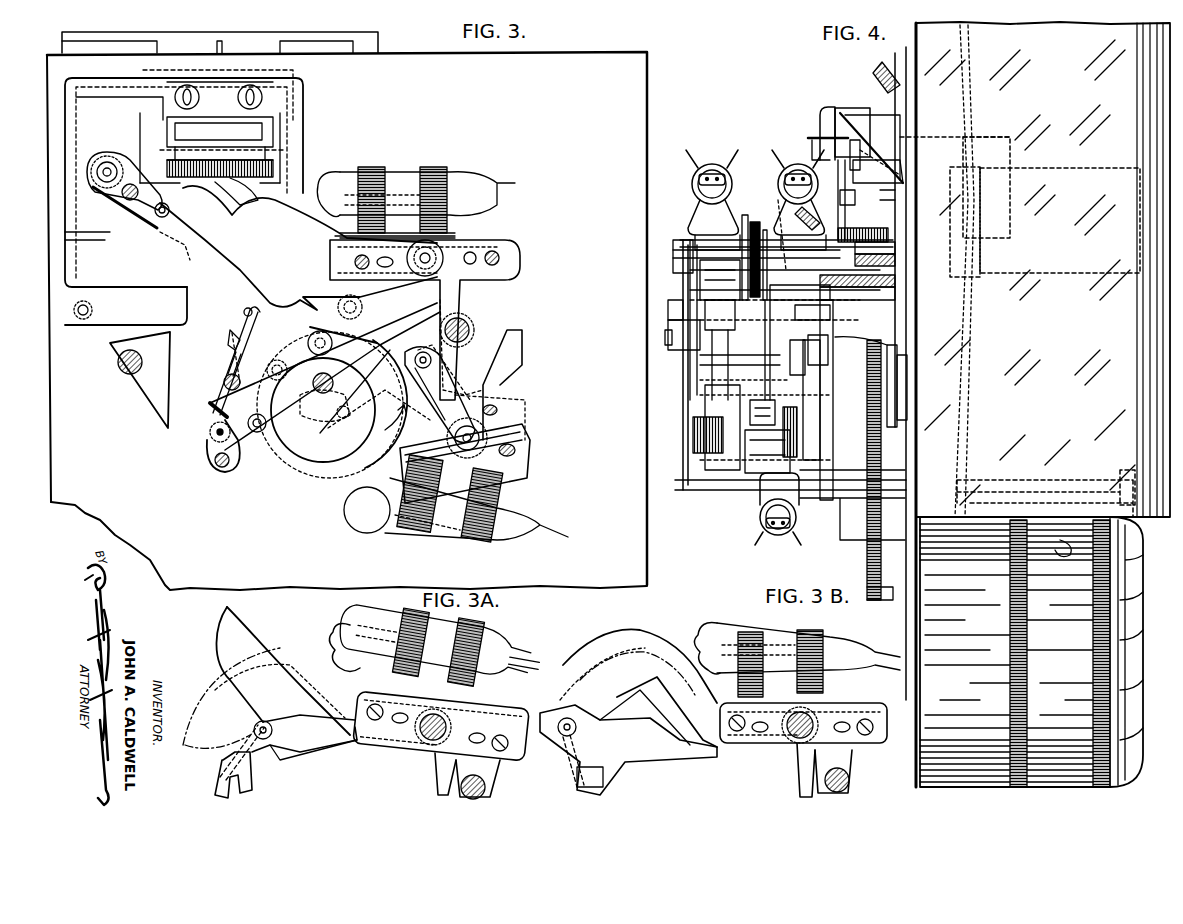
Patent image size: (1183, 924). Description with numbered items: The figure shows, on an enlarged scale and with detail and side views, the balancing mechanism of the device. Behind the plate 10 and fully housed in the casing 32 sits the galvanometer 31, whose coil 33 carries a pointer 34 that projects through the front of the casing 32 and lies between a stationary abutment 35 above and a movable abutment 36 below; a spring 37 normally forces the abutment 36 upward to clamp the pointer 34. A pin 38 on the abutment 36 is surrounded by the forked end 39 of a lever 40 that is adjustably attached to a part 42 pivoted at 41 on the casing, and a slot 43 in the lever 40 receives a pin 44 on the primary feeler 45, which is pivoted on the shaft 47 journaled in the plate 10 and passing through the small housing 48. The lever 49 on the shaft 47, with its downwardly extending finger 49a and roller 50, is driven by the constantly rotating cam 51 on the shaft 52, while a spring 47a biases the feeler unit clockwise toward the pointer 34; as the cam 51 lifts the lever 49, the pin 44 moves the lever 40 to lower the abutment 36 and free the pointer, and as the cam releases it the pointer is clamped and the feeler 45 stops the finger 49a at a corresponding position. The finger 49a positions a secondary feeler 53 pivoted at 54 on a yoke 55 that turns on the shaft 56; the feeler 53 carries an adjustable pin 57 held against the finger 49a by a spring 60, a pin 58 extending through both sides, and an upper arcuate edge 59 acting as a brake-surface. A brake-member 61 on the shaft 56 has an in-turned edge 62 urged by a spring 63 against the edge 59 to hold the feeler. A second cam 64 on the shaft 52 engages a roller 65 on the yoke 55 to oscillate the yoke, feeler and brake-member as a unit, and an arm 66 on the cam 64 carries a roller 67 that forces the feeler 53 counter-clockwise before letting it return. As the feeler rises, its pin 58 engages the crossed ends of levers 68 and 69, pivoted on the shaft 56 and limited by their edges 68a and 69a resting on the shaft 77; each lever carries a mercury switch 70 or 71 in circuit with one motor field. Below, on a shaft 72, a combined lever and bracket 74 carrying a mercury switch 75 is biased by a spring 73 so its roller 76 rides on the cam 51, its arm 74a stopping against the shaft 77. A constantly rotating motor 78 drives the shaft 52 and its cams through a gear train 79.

In FIG. 4, the plate 10 is at (918, 468).
In FIG. 3, the galvanometer 31 is at (380, 42).
In FIG. 4, the galvanometer 31 is at (1072, 168).
In FIG. 4, the casing 32 is at (1030, 480).
In FIG. 4, the coil 33 is at (972, 212).
In FIG. 3, the pointer 34 is at (187, 140).
In FIG. 4, the pointer 34 is at (930, 135).
In FIG. 3, the stationary abutment 35 is at (183, 130).
In FIG. 4, the stationary abutment 35 is at (848, 110).
In FIG. 3, the movable abutment 36 is at (260, 147).
In FIG. 4, the movable abutment 36 is at (814, 140).
In FIG. 3, the spring 37 is at (273, 193).
In FIG. 4, the spring 37 is at (895, 195).
In FIG. 3, the pin 38 is at (273, 170).
In FIG. 4, the pin 38 is at (852, 152).
In FIG. 3, the forked end 39 is at (262, 160).
In FIG. 4, the forked end 39 is at (828, 112).
In FIG. 3, the lever 40 is at (140, 168).
In FIG. 4, the lever 40 is at (905, 170).
In FIG. 3, the pivot 41 is at (105, 165).
In FIG. 3, the part 42 is at (98, 220).
In FIG. 3, the slot 43 is at (135, 197).
In FIG. 3, the pin 44 is at (162, 212).
In FIG. 4, the pin 44 is at (853, 200).
In FIG. 3, the primary feeler 45 is at (175, 165).
In FIG. 4, the primary feeler 45 is at (820, 112).
In FIG. 3, the shaft 47 is at (183, 280).
In FIG. 4, the shaft 47 is at (850, 232).
In FIG. 4, the spring 47a is at (895, 240).
In FIG. 3, the housing 48 is at (160, 232).
In FIG. 4, the housing 48 is at (858, 285).
In FIG. 3, the lever 49 is at (226, 320).
In FIG. 4, the lever 49 is at (783, 207).
In FIG. 3, the finger 49a is at (242, 449).
In FIG. 3, the roller 50 is at (420, 356).
In FIG. 4, the roller 50 is at (805, 312).
In FIG. 3, the cam 51 is at (345, 468).
In FIG. 4, the cam 51 is at (820, 462).
In FIG. 3, the shaft 52 is at (323, 395).
In FIG. 4, the shaft 52 is at (822, 410).
In FIG. 3, the secondary feeler 53 is at (218, 400).
In FIG. 4, the secondary feeler 53 is at (722, 400).
In FIG. 3A, the secondary feeler 53 is at (282, 750).
In FIG. 3B, the secondary feeler 53 is at (608, 767).
In FIG. 3, the pivot 54 is at (216, 432).
In FIG. 3, the yoke 55 is at (410, 364).
In FIG. 4, the yoke 55 is at (683, 278).
In FIG. 3, the shaft 56 is at (458, 235).
In FIG. 4, the shaft 56 is at (678, 248).
In FIG. 3A, the shaft 56 is at (420, 742).
In FIG. 3B, the shaft 56 is at (790, 738).
In FIG. 3, the pin 57 is at (225, 381).
In FIG. 4, the pin 57 is at (800, 362).
In FIG. 3, the pin 58 is at (236, 330).
In FIG. 4, the pin 58 is at (738, 303).
In FIG. 3A, the pin 58 is at (258, 732).
In FIG. 3B, the pin 58 is at (560, 738).
In FIG. 3, the arcuate edge 59 is at (245, 314).
In FIG. 3, the spring 60 is at (210, 406).
In FIG. 4, the brake-member 61 is at (770, 336).
In FIG. 4, the in-turned edge 62 is at (748, 222).
In FIG. 4, the spring 63 is at (748, 240).
In FIG. 3, the cam 64 is at (365, 452).
In FIG. 3, the roller 65 is at (312, 312).
In FIG. 4, the roller 65 is at (690, 335).
In FIG. 3, the arm 66 is at (285, 462).
In FIG. 3B, the arm 66 is at (627, 645).
In FIG. 4, the roller 67 is at (750, 432).
In FIG. 3, the lever 68 is at (200, 245).
In FIG. 4, the lever 68 is at (728, 255).
In FIG. 3A, the lever 68 is at (248, 642).
In FIG. 3B, the lever 68 is at (684, 742).
In FIG. 3, the projecting edge 68a is at (480, 330).
In FIG. 4, the projecting edge 68a is at (760, 336).
In FIG. 3A, the projecting edge 68a is at (423, 775).
In FIG. 3B, the projecting edge 68a is at (842, 760).
In FIG. 4, the lever 69 is at (805, 215).
In FIG. 3A, the lever 69 is at (203, 728).
In FIG. 4, the projecting edge 69a is at (778, 295).
In FIG. 3B, the projecting edge 69a is at (800, 775).
In FIG. 3, the mercury switch 70 is at (398, 175).
In FIG. 4, the mercury switch 70 is at (698, 180).
In FIG. 3A, the mercury switch 70 is at (373, 625).
In FIG. 3B, the mercury switch 70 is at (712, 645).
In FIG. 4, the mercury switch 71 is at (797, 163).
In FIG. 3A, the mercury switch 71 is at (340, 642).
In FIG. 3B, the mercury switch 71 is at (728, 625).
In FIG. 3, the shaft 72 is at (480, 437).
In FIG. 3, the spring 73 is at (508, 403).
In FIG. 4, the spring 73 is at (800, 403).
In FIG. 3, the combined lever and bracket 74 is at (530, 422).
In FIG. 4, the combined lever and bracket 74 is at (765, 468).
In FIG. 3, the arm 74a is at (522, 340).
In FIG. 4, the arm 74a is at (895, 352).
In FIG. 3, the mercury switch 75 is at (512, 522).
In FIG. 4, the mercury switch 75 is at (778, 540).
In FIG. 3, the roller 76 is at (404, 405).
In FIG. 4, the roller 76 is at (826, 345).
In FIG. 3, the shaft 77 is at (470, 318).
In FIG. 4, the shaft 77 is at (683, 303).
In FIG. 3A, the shaft 77 is at (487, 790).
In FIG. 3B, the shaft 77 is at (848, 790).
In FIG. 4, the motor 78 is at (1125, 727).
In FIG. 4, the gear train 79 is at (866, 560).